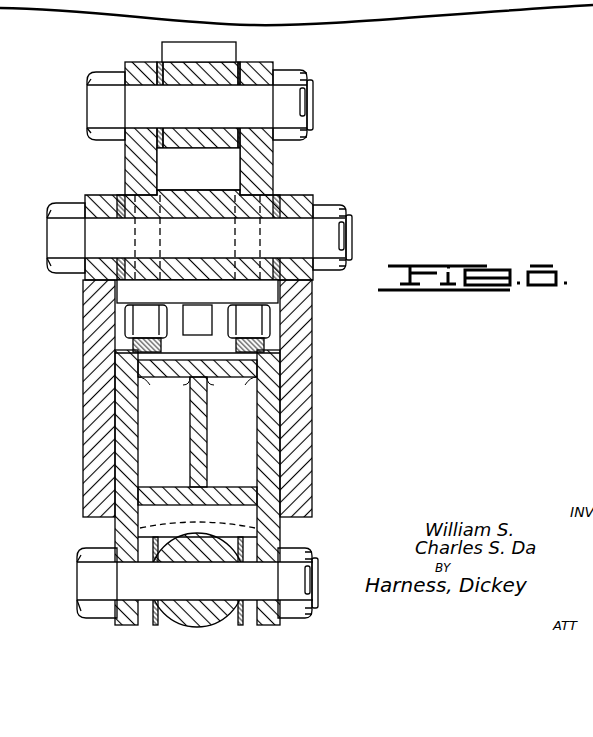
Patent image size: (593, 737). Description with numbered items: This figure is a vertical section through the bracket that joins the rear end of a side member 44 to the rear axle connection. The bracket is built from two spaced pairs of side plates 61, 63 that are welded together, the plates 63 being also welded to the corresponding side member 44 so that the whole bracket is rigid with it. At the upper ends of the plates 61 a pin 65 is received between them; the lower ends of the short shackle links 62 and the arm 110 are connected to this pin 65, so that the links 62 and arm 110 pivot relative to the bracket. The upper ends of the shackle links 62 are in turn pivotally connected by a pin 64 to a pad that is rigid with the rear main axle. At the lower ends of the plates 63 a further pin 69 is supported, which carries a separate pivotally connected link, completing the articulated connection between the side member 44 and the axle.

The side member 44 is at (202, 442).
The side plates 61 is at (88, 375).
The shackle links 62 is at (130, 165).
The side plates 63 is at (132, 430).
The pin 64 is at (315, 92).
The pin 65 is at (356, 228).
The pin 69 is at (320, 578).
The arm 110 is at (225, 208).